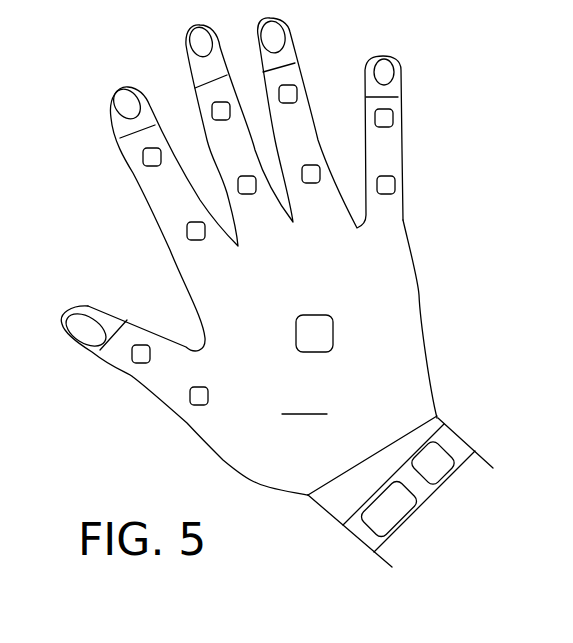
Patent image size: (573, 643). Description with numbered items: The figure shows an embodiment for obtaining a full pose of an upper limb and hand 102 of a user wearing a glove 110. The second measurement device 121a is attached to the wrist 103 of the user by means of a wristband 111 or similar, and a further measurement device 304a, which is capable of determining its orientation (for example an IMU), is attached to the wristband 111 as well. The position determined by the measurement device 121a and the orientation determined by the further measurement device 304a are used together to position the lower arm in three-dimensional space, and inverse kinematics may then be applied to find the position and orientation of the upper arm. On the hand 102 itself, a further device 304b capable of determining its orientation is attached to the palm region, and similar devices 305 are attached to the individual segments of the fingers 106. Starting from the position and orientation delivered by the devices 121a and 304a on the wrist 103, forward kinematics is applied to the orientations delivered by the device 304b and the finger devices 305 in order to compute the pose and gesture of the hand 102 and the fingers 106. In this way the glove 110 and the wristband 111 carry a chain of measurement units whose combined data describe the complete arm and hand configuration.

The hand 102 is at (232, 256).
The wrist 103 is at (436, 420).
The fingers 106 is at (125, 129).
The glove 110 is at (418, 288).
The wristband 111 is at (360, 543).
The second measurement device 121a is at (403, 527).
The further measurement device 304a is at (452, 472).
The further device capable of determining its orientation 304b is at (313, 315).
The similar devices 305 is at (212, 110).